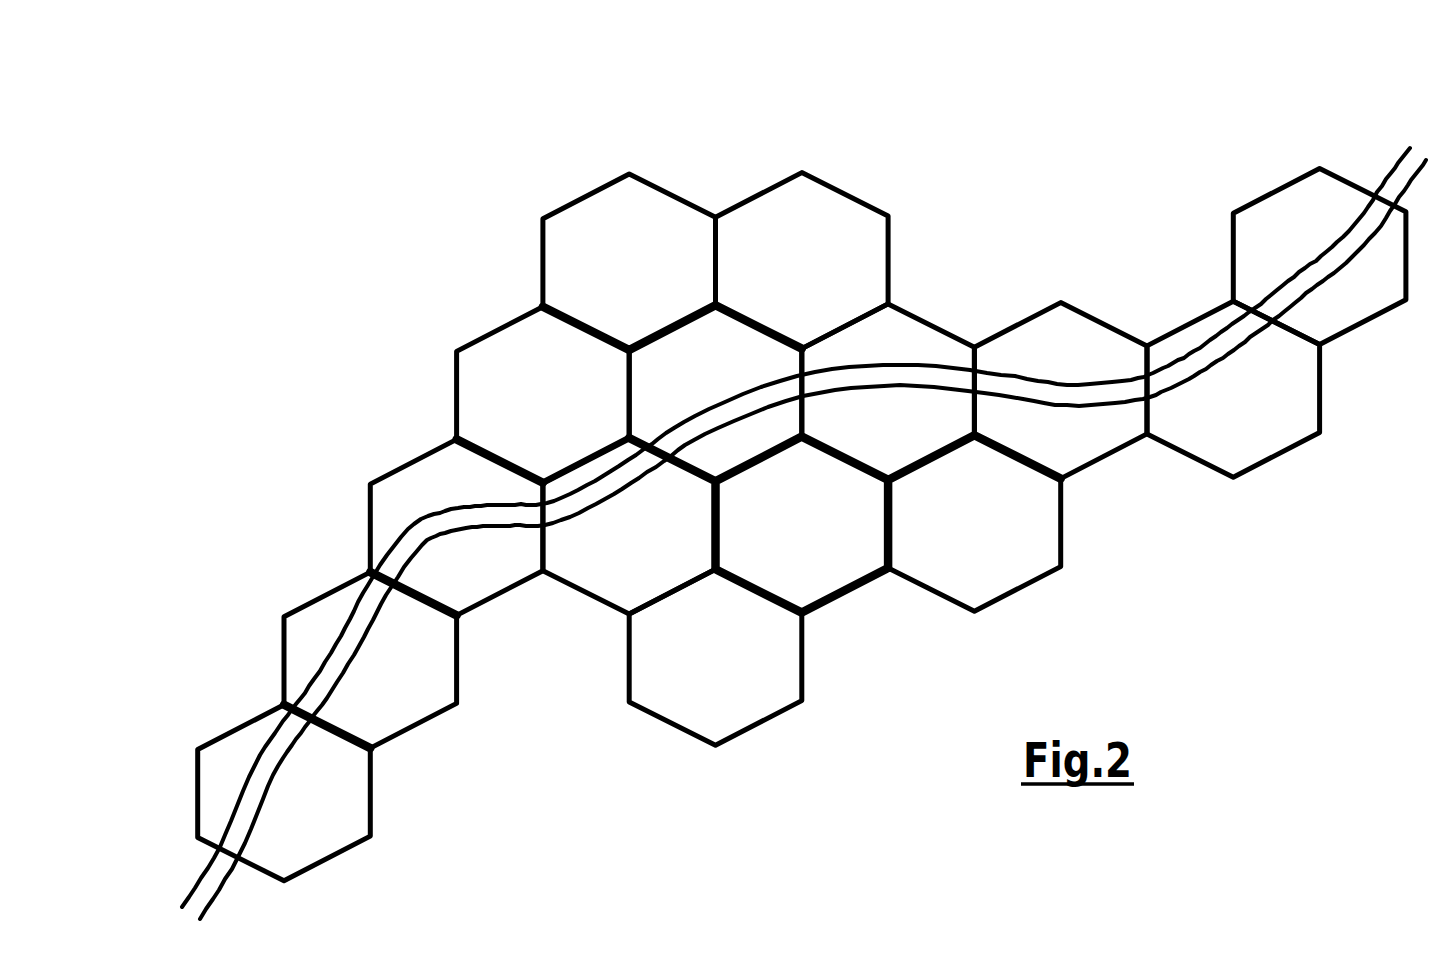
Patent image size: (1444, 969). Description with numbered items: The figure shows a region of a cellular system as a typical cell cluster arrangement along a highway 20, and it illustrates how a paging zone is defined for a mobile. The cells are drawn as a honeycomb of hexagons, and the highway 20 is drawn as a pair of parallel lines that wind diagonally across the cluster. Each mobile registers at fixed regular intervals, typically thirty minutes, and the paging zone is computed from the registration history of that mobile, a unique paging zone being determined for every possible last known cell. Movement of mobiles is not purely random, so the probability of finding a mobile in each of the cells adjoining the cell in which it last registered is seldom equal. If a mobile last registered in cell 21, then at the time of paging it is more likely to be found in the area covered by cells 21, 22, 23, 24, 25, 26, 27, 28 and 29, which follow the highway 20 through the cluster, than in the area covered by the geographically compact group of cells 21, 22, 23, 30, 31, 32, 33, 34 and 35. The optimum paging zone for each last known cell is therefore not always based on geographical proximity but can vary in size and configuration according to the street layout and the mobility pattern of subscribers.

The highway 20 is at (1400, 138).
The cell 21 is at (715, 393).
The cell 22 is at (888, 392).
The cell 23 is at (629, 526).
The cell 24 is at (1060, 391).
The cell 25 is at (456, 527).
The cell 26 is at (1233, 389).
The cell 27 is at (370, 660).
The cell 28 is at (1319, 257).
The cell 29 is at (284, 793).
The cell 30 is at (543, 395).
The cell 31 is at (629, 262).
The cell 32 is at (802, 261).
The cell 33 is at (974, 523).
The cell 34 is at (802, 525).
The cell 35 is at (715, 657).